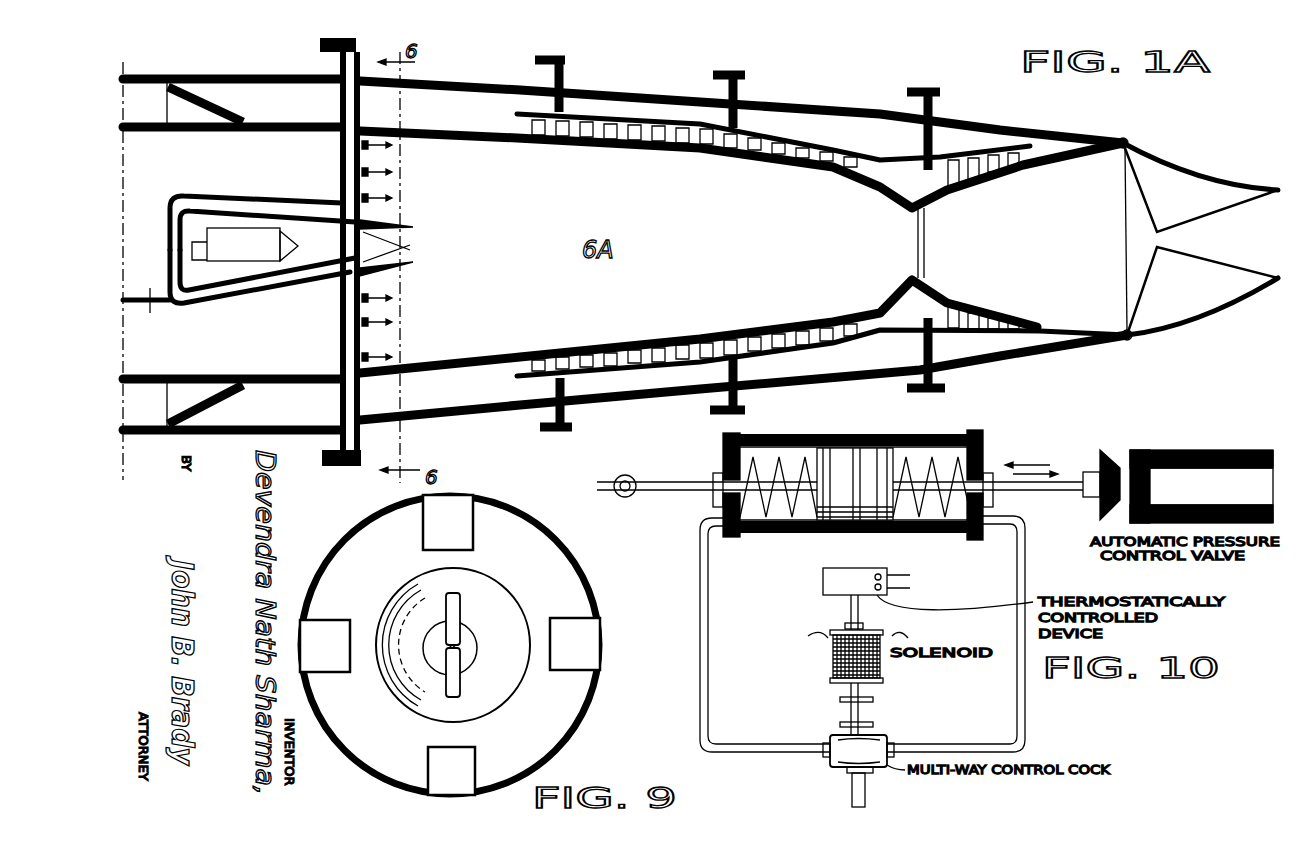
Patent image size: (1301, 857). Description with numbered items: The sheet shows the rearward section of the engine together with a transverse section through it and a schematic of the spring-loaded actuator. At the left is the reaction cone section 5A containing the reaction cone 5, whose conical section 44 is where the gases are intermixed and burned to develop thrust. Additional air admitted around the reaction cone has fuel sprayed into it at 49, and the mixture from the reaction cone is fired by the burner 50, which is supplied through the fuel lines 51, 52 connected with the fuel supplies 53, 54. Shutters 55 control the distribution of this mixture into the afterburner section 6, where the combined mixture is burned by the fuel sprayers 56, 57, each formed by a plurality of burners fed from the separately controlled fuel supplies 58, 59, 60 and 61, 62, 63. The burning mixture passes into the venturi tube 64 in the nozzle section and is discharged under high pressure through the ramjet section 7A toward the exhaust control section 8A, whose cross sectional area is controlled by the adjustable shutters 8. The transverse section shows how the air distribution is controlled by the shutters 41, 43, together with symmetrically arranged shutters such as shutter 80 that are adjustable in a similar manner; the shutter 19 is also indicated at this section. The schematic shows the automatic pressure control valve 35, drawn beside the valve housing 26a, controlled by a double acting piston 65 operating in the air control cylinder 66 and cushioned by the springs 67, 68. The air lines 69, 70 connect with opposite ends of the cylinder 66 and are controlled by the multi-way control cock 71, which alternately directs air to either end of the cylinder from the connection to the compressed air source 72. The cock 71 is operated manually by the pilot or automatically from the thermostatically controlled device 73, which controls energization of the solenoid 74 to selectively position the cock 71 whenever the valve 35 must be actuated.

In FIG. 1A, the reaction cone section 5A is at (203, 78).
In FIG. 1A, the fuel supply 53 is at (318, 44).
In FIG. 1A, the afterburner section 6 is at (436, 154).
In FIG. 1A, the fuel supply 58 is at (570, 60).
In FIG. 1A, the fuel supply 59 is at (742, 74).
In FIG. 1A, the fuel supply 60 is at (929, 92).
In FIG. 1A, the ramjet section 7A is at (1078, 172).
In FIG. 1A, the exhaust control section 8A is at (1192, 180).
In FIG. 1A, the adjustable shutters 8 is at (1217, 300).
In FIG. 1A, the fuel spray 49 is at (390, 198).
In FIG. 1A, the fuel line 51 is at (255, 200).
In FIG. 9, the fuel line 51 is at (458, 601).
In FIG. 1A, the shutters 55 is at (414, 226).
In FIG. 1A, the burner 50 is at (262, 248).
In FIG. 9, the burner 50 is at (427, 627).
In FIG. 1A, the venturi tube 64 is at (925, 232).
In FIG. 1A, the fuel sprayer 56 is at (712, 140).
In FIG. 1A, the fuel sprayer 57 is at (740, 340).
In FIG. 1A, the conical section 44 is at (146, 318).
In FIG. 9, the conical section 44 is at (405, 688).
In FIG. 1A, the fuel line 52 is at (252, 300).
In FIG. 9, the fuel line 52 is at (458, 688).
In FIG. 1A, the fuel supply 54 is at (318, 460).
In FIG. 1A, the fuel supply 63 is at (548, 438).
In FIG. 1A, the fuel supply 62 is at (712, 418).
In FIG. 1A, the fuel supply 61 is at (931, 396).
In FIG. 9, the shutter 41 is at (460, 535).
In FIG. 9, the shutter 43 is at (470, 768).
In FIG. 9, the spacer block 19 is at (340, 660).
In FIG. 9, the shutter 80 is at (568, 660).
In FIG. 9, the reaction cone 5 is at (513, 612).
In FIG. 10, the spring 67 is at (778, 463).
In FIG. 10, the double acting piston 65 is at (848, 457).
In FIG. 10, the air control cylinder 66 is at (767, 535).
In FIG. 10, the spring 68 is at (940, 507).
In FIG. 10, the thermostatically controlled device 73 is at (833, 587).
In FIG. 10, the air line 69 is at (705, 660).
In FIG. 10, the solenoid 74 is at (846, 665).
In FIG. 10, the multi-way control cock 71 is at (897, 740).
In FIG. 10, the air line 70 is at (1025, 720).
In FIG. 10, the compressed air source connection 72 is at (852, 795).
In FIG. 10, the automatic pressure control valve 35 is at (1117, 462).
In FIG. 10, the valve housing 26a is at (1207, 453).